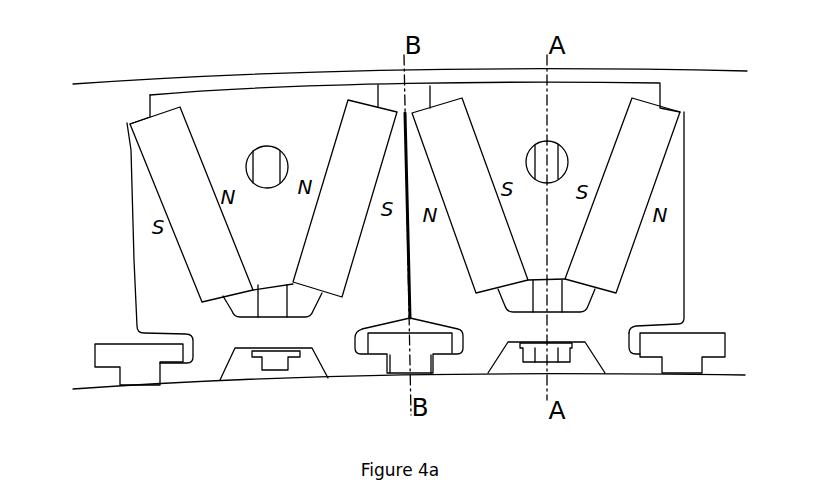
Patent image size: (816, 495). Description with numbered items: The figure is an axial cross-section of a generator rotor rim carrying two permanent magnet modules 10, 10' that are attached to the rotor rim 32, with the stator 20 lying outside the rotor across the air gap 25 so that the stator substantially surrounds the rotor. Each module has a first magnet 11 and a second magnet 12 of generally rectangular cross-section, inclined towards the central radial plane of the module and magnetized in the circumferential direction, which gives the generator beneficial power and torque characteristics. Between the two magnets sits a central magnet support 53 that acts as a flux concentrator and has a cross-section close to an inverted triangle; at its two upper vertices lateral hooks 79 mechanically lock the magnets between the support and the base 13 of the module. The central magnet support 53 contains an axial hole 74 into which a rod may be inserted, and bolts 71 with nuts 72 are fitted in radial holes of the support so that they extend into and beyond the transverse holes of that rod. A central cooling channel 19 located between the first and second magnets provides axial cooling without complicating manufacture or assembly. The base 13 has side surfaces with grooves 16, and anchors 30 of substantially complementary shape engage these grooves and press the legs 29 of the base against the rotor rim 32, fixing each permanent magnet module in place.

The permanent magnet module 10 is at (223, 232).
The permanent magnet module 10' is at (595, 208).
The first magnet 11 is at (447, 140).
The second magnet 12 is at (642, 118).
The base 13 is at (213, 337).
The groove 16 is at (634, 345).
The central cooling channel 19 is at (294, 302).
The stator 20 is at (305, 73).
The air gap 25 is at (360, 82).
The leg 29 is at (447, 367).
The anchor 30 is at (680, 362).
The rotor rim 32 is at (512, 376).
The central magnet support 53 is at (520, 107).
The bolt 71 is at (272, 302).
The nut 72 is at (295, 360).
The axial hole 74 is at (565, 162).
The lateral hook 79 is at (440, 100).